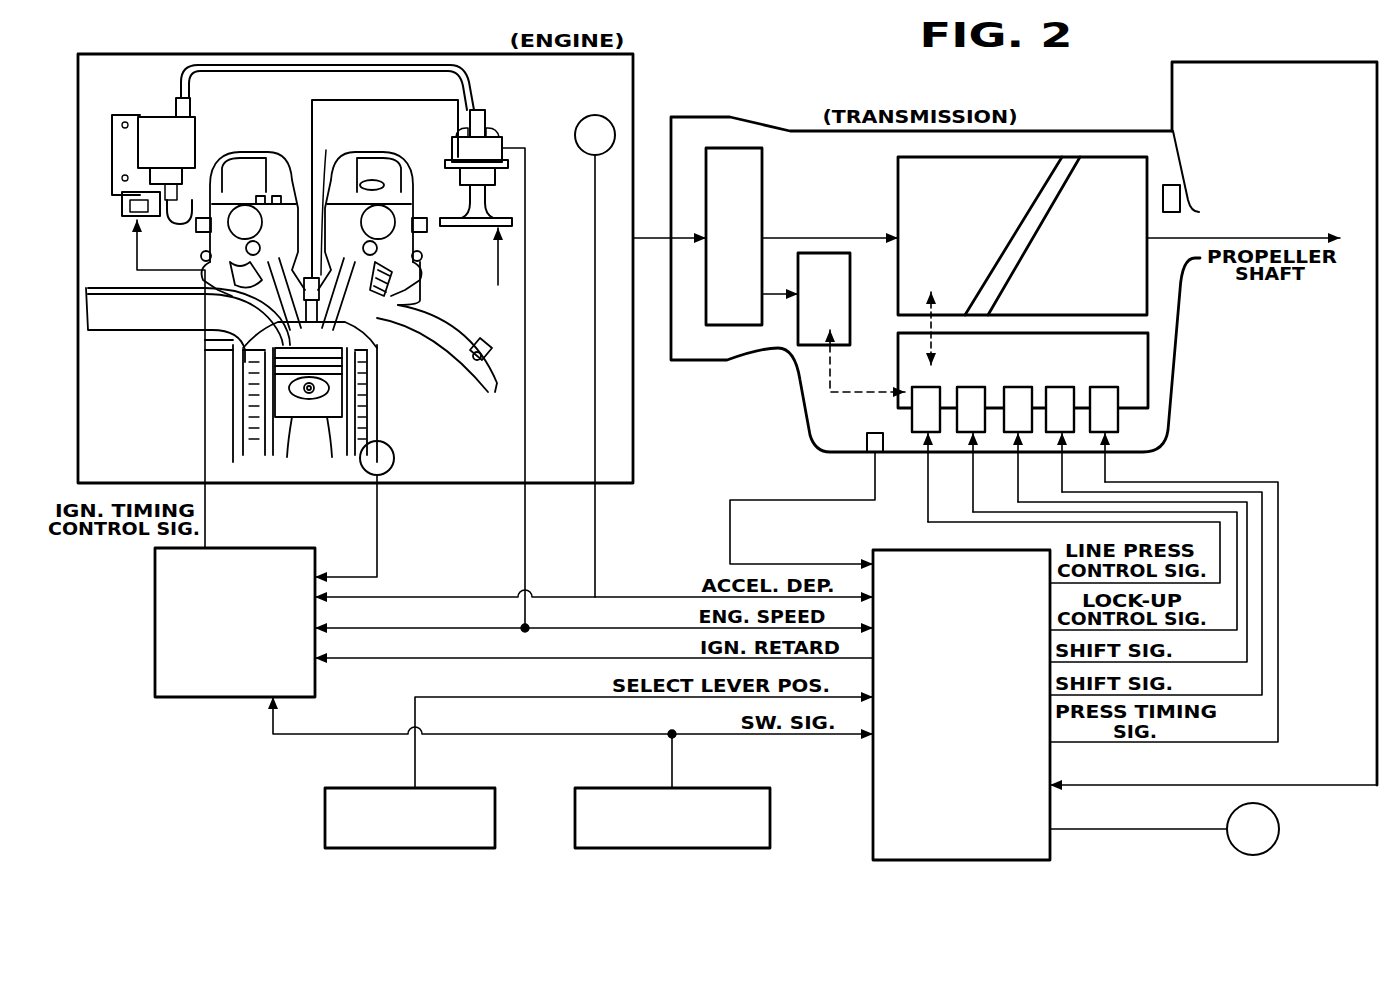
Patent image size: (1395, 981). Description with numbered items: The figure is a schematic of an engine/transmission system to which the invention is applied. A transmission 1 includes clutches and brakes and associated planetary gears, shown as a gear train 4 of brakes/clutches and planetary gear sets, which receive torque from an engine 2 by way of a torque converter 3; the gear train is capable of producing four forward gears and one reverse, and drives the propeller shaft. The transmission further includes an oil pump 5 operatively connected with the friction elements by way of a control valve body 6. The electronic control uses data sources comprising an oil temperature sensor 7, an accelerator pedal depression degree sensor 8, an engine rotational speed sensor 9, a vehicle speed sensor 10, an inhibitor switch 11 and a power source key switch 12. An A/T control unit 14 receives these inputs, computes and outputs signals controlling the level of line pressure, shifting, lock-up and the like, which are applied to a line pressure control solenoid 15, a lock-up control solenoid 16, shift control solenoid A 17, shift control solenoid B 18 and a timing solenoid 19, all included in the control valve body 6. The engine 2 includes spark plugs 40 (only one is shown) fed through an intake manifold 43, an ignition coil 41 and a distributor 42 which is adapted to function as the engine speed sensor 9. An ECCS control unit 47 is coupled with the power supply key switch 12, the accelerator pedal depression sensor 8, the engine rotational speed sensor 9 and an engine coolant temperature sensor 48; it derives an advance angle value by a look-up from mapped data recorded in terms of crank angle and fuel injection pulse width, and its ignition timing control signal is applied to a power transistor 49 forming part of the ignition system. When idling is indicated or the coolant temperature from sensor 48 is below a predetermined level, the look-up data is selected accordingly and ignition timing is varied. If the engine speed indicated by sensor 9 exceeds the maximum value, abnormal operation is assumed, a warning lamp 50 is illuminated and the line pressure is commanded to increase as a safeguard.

The transmission 1 is at (805, 100).
The engine 2 is at (636, 88).
The torque converter 3 is at (762, 186).
The transmission gear train (brakes/clutches and planetary gear sets) 4 is at (1092, 157).
The oil pump 5 is at (850, 288).
The control valve body 6 is at (1148, 343).
The oil temperature sensor 7 is at (867, 440).
The accelerator pedal depression degree sensor 8 is at (580, 120).
The engine rotational speed sensor 9 is at (485, 148).
The vehicle speed sensor 10 is at (1178, 186).
The inhibitor switch 11 is at (325, 818).
The power source key switch 12 is at (770, 796).
The A/T control unit 14 is at (873, 843).
The line pressure control solenoid 15 is at (918, 434).
The lock-up control solenoid 16 is at (962, 434).
The shift control solenoid A 17 is at (1008, 434).
The shift control solenoid B 18 is at (1052, 434).
The timing solenoid 19 is at (1096, 434).
The spark plug 40 is at (385, 189).
The ignition coil 41 is at (150, 130).
The distributor 42 is at (468, 124).
The intake manifold 43 is at (125, 335).
The ECCS control unit 47 is at (185, 698).
The engine coolant temperature sensor 48 is at (393, 449).
The power transistor 49 is at (133, 220).
The warning lamp 50 is at (1280, 828).